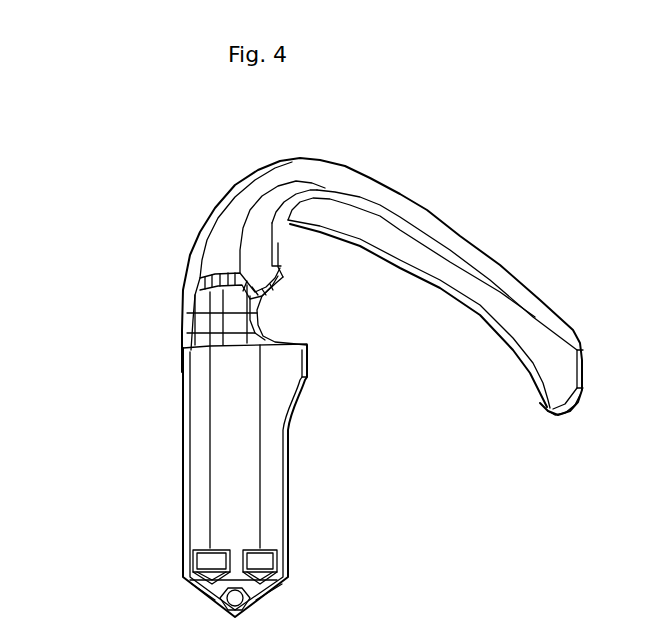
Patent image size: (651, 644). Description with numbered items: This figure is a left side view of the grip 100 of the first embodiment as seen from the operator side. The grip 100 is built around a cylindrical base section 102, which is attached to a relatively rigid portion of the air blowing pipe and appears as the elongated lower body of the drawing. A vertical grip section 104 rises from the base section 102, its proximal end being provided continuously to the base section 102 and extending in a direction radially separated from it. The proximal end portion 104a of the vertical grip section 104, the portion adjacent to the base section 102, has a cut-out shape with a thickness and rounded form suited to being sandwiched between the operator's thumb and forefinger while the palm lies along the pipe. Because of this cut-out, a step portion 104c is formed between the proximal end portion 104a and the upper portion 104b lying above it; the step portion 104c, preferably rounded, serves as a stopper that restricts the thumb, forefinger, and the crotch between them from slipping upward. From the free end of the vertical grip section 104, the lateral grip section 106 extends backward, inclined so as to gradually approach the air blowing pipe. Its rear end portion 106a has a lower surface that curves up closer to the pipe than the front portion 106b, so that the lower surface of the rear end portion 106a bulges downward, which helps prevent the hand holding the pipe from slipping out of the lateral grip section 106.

The grip 100 is at (80, 227).
The cylindrical base section 102 is at (288, 506).
The vertical grip section 104 is at (231, 185).
The proximal end portion 104a is at (237, 322).
The upper portion 104b is at (256, 233).
The step portion 104c is at (223, 294).
The lateral grip section 106 is at (467, 232).
The rear end portion 106a is at (556, 377).
The front portion 106b is at (438, 266).